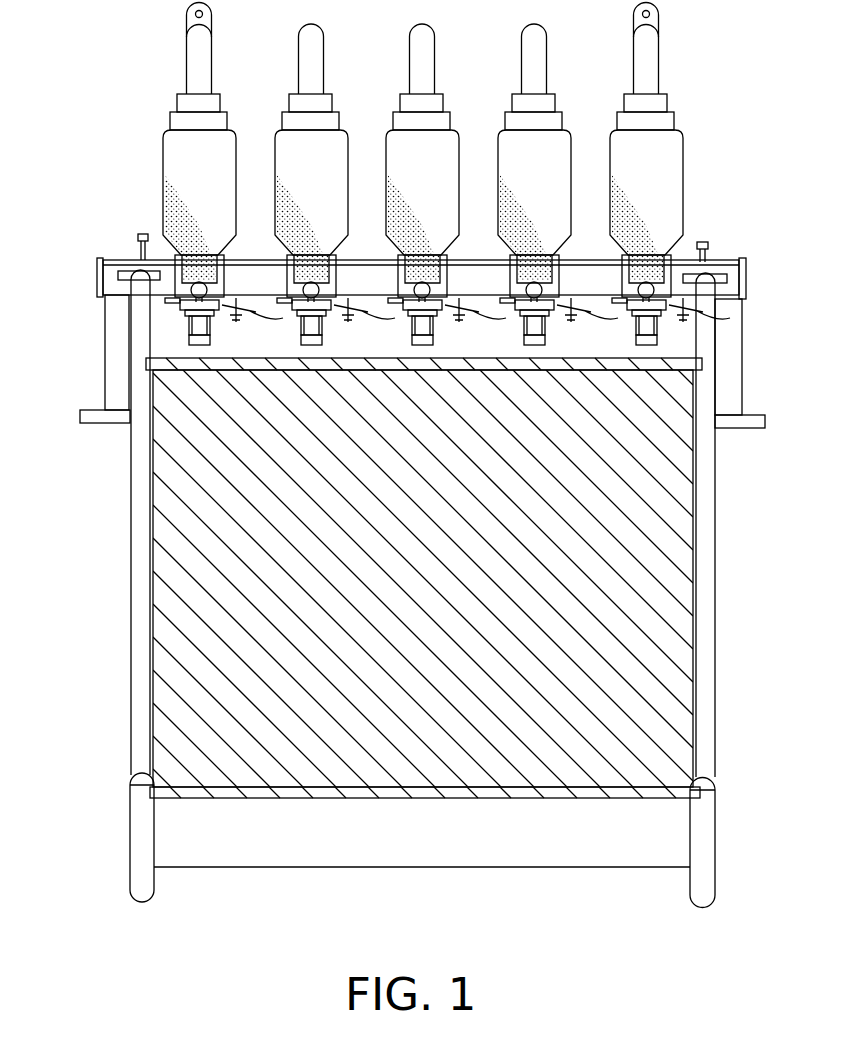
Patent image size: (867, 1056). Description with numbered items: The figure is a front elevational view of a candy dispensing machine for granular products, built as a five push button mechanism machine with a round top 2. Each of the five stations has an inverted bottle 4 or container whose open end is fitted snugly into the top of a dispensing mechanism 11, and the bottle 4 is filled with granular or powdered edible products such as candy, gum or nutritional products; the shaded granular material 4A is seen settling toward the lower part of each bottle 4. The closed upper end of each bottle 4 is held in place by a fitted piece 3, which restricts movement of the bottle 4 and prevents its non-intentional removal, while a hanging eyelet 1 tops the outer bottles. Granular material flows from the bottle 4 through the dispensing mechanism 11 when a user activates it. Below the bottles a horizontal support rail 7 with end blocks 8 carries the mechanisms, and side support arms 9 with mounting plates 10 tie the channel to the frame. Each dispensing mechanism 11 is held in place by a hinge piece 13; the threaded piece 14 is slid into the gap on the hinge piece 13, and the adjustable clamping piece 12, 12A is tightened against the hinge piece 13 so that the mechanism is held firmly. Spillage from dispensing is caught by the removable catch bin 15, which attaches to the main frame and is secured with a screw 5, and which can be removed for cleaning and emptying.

The hanging eyelet 1 is at (191, 13).
The round top 2 is at (192, 57).
The fitted piece 3 is at (186, 104).
The inverted bottle 4 is at (171, 155).
The particulate material 4A is at (171, 212).
The screw 5 is at (138, 237).
The support rail 7 is at (116, 258).
The rail end block 8 is at (97, 272).
The support arm 9 is at (108, 355).
The mounting plate 10 is at (80, 416).
The dispensing mechanism 11 is at (228, 276).
The adjustable clamping piece 12 is at (248, 312).
The adjustable clamping piece 12A is at (207, 344).
The hinge piece 13 is at (320, 322).
The threaded piece 14 is at (236, 318).
The catch bin 15 is at (722, 723).